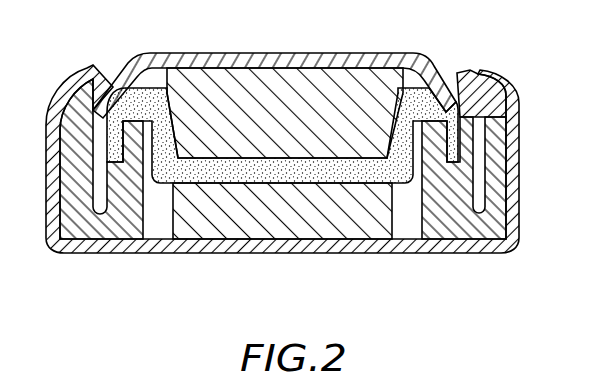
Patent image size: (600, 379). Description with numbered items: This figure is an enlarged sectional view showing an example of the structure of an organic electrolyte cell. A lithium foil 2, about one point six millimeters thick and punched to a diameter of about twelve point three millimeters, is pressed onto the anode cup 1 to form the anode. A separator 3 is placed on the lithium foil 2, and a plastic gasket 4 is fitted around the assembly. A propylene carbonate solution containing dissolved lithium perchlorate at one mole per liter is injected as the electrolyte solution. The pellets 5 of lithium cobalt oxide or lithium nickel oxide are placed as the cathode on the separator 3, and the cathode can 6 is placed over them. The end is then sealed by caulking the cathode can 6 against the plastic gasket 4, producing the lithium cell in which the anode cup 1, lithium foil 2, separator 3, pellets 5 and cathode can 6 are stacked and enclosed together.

The anode cup 1 is at (229, 62).
The lithium foil 2 is at (280, 74).
The separator 3 is at (334, 172).
The plastic gasket 4 is at (502, 132).
The pellets 5 is at (262, 218).
The cathode can 6 is at (519, 183).